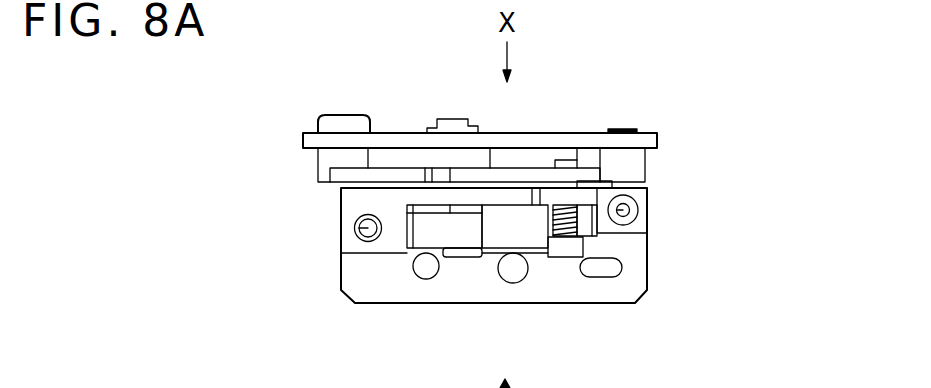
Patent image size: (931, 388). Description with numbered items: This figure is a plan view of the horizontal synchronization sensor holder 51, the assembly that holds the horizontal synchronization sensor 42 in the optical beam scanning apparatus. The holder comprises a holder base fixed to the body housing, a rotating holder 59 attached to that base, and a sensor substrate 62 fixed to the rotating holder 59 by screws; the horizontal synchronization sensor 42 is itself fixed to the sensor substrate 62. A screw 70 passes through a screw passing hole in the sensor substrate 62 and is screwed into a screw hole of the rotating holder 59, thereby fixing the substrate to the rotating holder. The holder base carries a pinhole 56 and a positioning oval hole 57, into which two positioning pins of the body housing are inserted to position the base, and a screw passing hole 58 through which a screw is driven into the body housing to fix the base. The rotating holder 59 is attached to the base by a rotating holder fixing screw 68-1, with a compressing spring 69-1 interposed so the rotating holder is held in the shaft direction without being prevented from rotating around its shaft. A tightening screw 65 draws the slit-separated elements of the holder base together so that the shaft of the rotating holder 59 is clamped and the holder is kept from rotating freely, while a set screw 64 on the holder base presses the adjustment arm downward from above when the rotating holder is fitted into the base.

The horizontal synchronization sensor holder 51 is at (762, 213).
The sensor substrate 62 is at (640, 140).
The horizontal synchronization sensor 42 is at (478, 126).
The screw 70 is at (342, 115).
The rotating holder 59 is at (640, 168).
The tightening screw 65 is at (636, 208).
The set screw 64 is at (355, 228).
The compressing spring 69-1 is at (577, 237).
The rotating holder fixing screw 68-1 is at (558, 250).
The positioning oval hole 57 is at (600, 268).
The screw passing hole 58 is at (507, 274).
The pinhole 56 is at (425, 266).